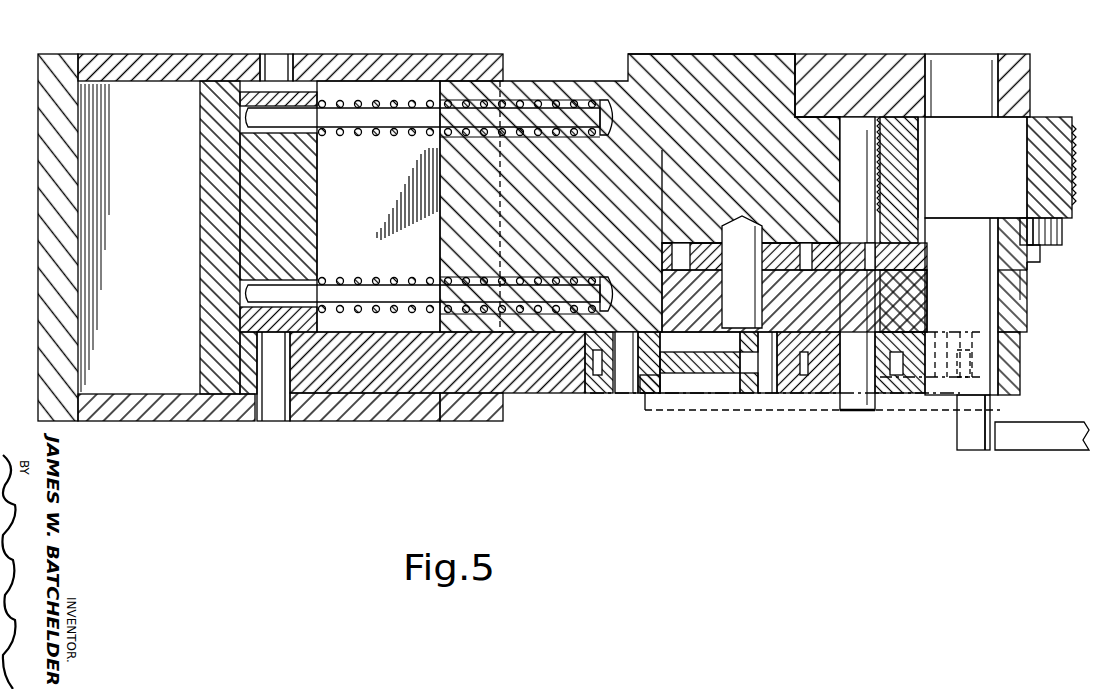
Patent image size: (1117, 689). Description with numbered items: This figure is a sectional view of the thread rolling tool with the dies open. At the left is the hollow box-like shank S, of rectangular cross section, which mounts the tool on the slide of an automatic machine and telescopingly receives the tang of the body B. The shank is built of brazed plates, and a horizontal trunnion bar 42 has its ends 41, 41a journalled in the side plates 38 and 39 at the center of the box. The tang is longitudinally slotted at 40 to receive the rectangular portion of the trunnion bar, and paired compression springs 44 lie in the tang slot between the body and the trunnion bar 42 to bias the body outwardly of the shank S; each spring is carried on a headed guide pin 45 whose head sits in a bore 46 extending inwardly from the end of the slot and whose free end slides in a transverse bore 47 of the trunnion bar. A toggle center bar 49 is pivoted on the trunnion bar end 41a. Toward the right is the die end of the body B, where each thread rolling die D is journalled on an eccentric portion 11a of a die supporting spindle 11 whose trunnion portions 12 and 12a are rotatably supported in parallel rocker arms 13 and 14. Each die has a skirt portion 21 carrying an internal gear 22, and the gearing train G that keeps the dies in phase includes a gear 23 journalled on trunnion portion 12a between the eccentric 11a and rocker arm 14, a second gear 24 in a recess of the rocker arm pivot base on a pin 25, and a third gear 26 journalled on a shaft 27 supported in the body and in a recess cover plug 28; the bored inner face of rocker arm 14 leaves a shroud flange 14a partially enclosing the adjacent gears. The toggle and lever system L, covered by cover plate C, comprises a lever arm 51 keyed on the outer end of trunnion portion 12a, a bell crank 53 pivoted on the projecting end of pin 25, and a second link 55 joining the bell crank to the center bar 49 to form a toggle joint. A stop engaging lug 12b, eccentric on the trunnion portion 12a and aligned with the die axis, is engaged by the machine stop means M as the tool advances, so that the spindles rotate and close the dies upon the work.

The die supporting spindle 11 is at (940, 52).
The eccentric portion 11a is at (1032, 120).
The trunnion portion 12 is at (958, 60).
The trunnion portion 12a is at (935, 386).
The stop engaging lug 12b is at (986, 452).
The rocker arm 13 is at (1020, 57).
The rocker arm 14 is at (1035, 332).
The shroud flange 14a is at (1036, 264).
The skirt portion 21 is at (1062, 228).
The internal gear 22 is at (1045, 251).
The gear 23 is at (1026, 283).
The second gear 24 is at (810, 243).
The pin 25 is at (852, 414).
The third gear 26 is at (785, 243).
The shaft 27 is at (735, 328).
The recess cover plug 28 is at (668, 322).
The side plate 38 is at (332, 56).
The side plate 39 is at (305, 421).
The tang slot 40 is at (372, 90).
The trunnion bar end 41 is at (270, 56).
The trunnion bar end 41a is at (270, 422).
The trunnion bar 42 is at (314, 172).
The compression spring 44 is at (373, 278).
The headed guide pin 45 is at (408, 278).
The bore 46 is at (412, 276).
The transverse bore 47 is at (300, 252).
The toggle center bar 49 is at (440, 395).
The lever arm 51 is at (1020, 381).
The bell crank 53 is at (764, 395).
The second link 55 is at (640, 395).
The shank S is at (436, 52).
The body block I is at (536, 78).
The body B is at (718, 56).
The thread rolling die D is at (1076, 192).
The gearing train G is at (1042, 259).
The cover plate C is at (688, 410).
The toggle and lever system L is at (801, 400).
The stop means M is at (1068, 456).